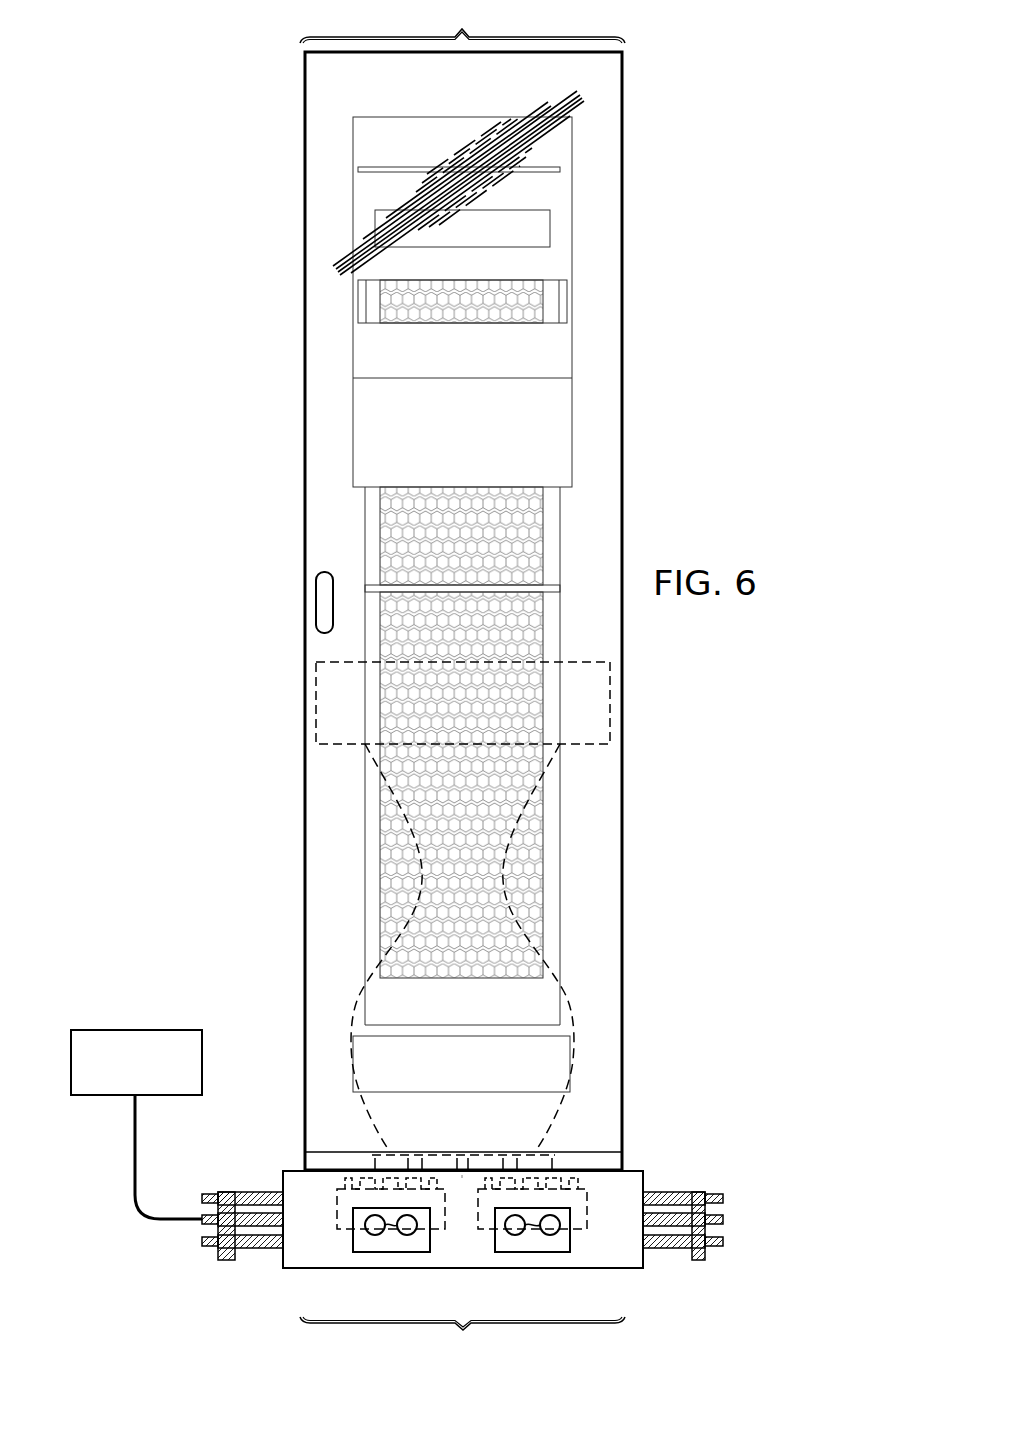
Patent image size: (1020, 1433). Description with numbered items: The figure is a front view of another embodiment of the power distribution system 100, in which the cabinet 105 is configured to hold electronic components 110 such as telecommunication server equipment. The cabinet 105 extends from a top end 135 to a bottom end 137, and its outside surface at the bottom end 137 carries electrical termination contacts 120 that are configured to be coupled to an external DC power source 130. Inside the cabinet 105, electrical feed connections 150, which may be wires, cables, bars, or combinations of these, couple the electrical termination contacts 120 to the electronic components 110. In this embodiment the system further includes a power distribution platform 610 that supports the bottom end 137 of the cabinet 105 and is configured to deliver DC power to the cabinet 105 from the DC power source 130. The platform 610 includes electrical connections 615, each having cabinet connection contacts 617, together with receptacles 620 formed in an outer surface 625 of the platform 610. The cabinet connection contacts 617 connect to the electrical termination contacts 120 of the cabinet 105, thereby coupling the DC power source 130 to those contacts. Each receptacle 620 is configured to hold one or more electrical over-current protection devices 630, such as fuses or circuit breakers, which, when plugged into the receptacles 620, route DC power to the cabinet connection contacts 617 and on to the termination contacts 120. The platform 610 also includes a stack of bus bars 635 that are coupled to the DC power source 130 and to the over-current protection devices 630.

The power distribution system 100 is at (201, 386).
The cabinet 105 is at (626, 220).
The electronic components 110 is at (316, 702).
The electrical termination contacts 120 is at (372, 1160).
The DC power source 130 is at (108, 1030).
The top end 135 is at (462, 22).
The bottom end 137 is at (462, 1338).
The electrical feed connections 150 is at (355, 1003).
The power distribution platform 610 is at (645, 1176).
The electrical connections 615 is at (337, 1212).
The cabinet connection contacts 617 is at (345, 1190).
The receptacles 620 is at (353, 1240).
The outer surface 625 is at (462, 1185).
The electrical over-current protection devices 630 is at (390, 1242).
The bus bars 635 is at (257, 1192).